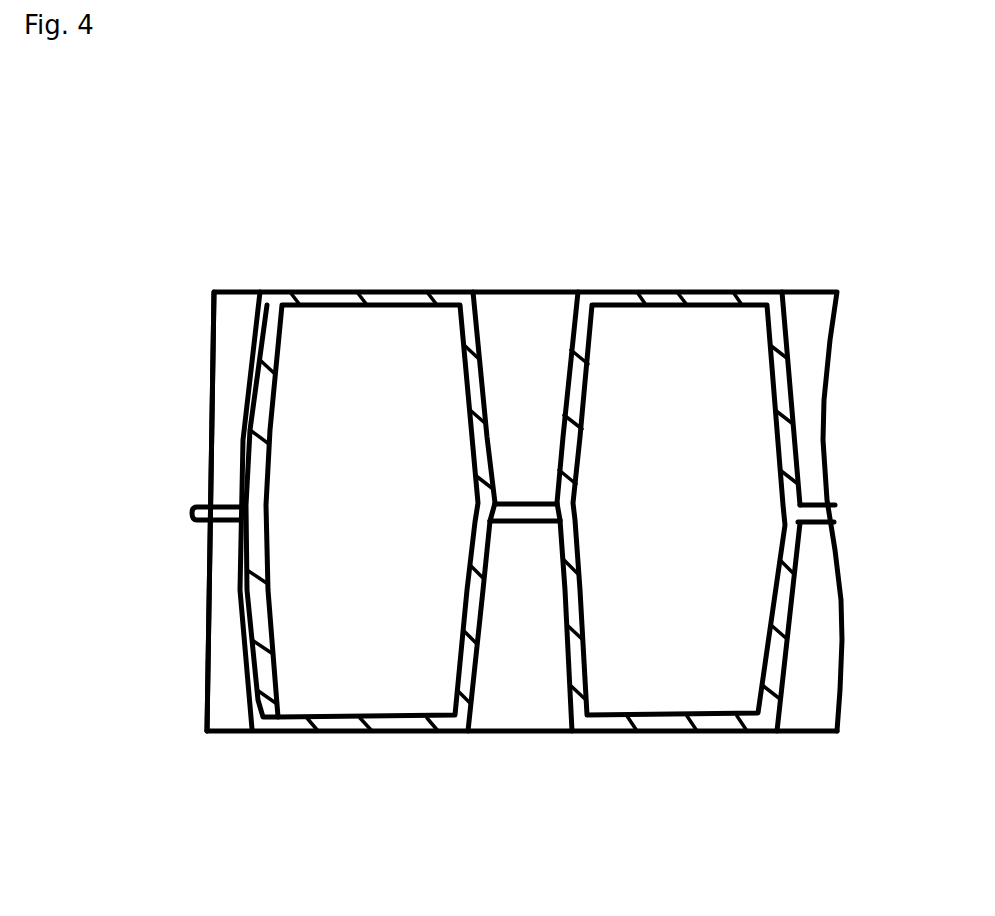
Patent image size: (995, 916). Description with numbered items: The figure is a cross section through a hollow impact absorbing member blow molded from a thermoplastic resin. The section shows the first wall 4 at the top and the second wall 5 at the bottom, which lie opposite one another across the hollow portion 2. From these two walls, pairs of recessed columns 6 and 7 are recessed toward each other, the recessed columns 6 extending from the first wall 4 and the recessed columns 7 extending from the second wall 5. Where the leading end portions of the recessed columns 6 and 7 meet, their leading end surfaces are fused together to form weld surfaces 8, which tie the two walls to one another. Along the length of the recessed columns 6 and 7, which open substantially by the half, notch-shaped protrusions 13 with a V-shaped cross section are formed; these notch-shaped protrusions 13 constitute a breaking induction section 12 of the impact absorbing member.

The hollow portion 2 is at (373, 355).
The first wall 4 is at (697, 292).
The second wall 5 is at (681, 734).
The recessed column 6 is at (235, 318).
The recessed column 7 is at (226, 702).
The weld surface 8 is at (193, 511).
The breaking induction section 12 is at (217, 433).
The notch-shaped protrusion 13 is at (245, 378).